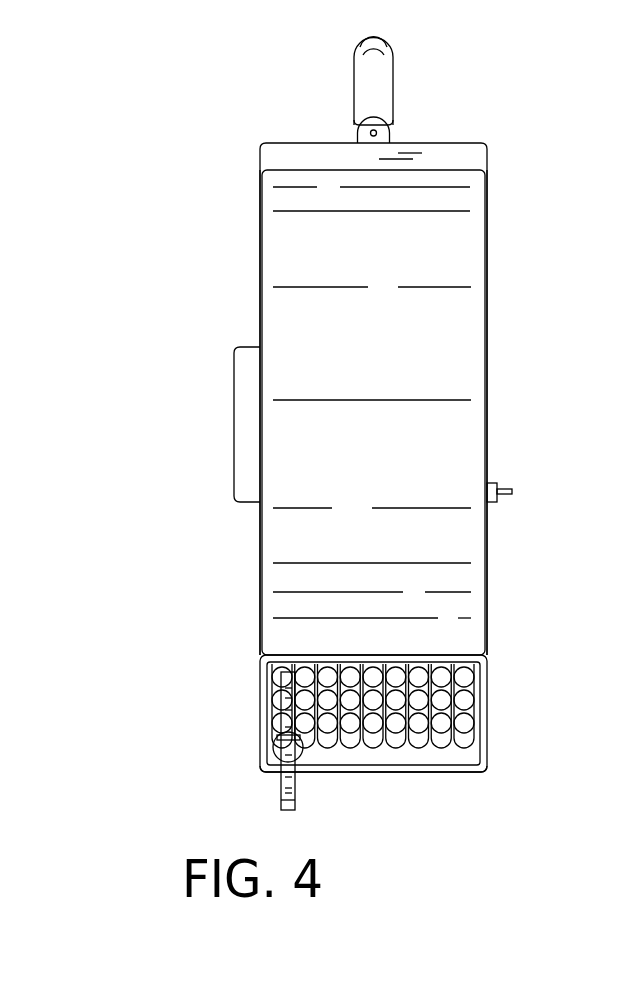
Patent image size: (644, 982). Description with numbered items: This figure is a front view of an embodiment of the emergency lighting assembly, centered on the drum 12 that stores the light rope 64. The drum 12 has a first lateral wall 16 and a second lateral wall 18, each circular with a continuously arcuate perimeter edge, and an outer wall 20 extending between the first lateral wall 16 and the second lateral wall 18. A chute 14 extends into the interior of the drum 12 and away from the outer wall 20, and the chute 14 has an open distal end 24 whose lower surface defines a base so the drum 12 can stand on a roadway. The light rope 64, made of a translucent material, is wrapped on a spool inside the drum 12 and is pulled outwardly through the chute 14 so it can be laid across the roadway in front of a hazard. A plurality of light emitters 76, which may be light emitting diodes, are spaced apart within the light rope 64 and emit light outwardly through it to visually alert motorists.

The drum 12 is at (263, 143).
The chute 14 is at (500, 772).
The first lateral wall 16 is at (487, 287).
The second lateral wall 18 is at (260, 232).
The outer wall 20 is at (438, 197).
The distal end 24 is at (445, 762).
The light rope 64 is at (372, 743).
The light emitters 76 is at (376, 672).